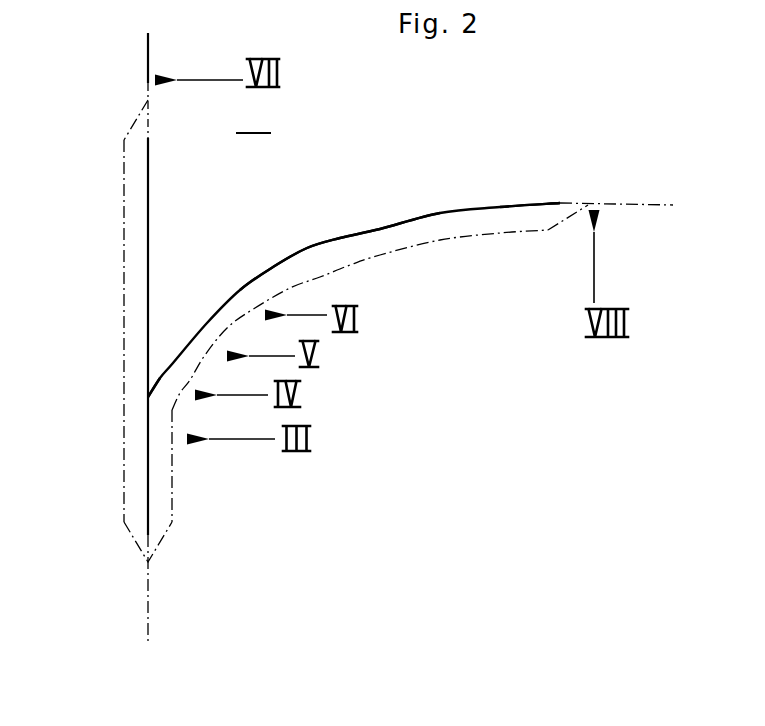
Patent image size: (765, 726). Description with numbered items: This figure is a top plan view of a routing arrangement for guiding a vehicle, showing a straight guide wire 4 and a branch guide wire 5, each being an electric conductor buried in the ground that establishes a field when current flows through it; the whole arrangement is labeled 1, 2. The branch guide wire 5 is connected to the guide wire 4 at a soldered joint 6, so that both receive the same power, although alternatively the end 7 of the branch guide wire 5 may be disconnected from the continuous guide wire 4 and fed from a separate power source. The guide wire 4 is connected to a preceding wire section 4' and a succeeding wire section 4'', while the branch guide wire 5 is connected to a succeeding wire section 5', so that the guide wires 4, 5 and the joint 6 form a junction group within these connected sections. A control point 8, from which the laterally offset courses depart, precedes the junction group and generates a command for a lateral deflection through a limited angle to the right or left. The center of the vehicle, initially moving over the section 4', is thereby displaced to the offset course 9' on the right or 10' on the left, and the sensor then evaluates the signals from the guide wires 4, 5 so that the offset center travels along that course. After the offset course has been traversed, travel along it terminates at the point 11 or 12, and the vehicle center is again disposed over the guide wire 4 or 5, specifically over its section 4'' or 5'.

The sheet metal part 1 is at (354, 250).
The sheet metal part 2 is at (360, 320).
The guide wire 4 is at (178, 309).
The preceding wire section 4' is at (184, 590).
The succeeding wire section 4'' is at (183, 48).
The branch guide wire 5 is at (340, 225).
The succeeding wire section 5' is at (619, 240).
The joint 6 is at (148, 397).
The end of the branch guide wire 7 is at (545, 203).
The control point 8 is at (146, 562).
The offset course 9' is at (212, 466).
The offset course 10' is at (92, 331).
The point 11 is at (148, 100).
The point 12 is at (587, 205).